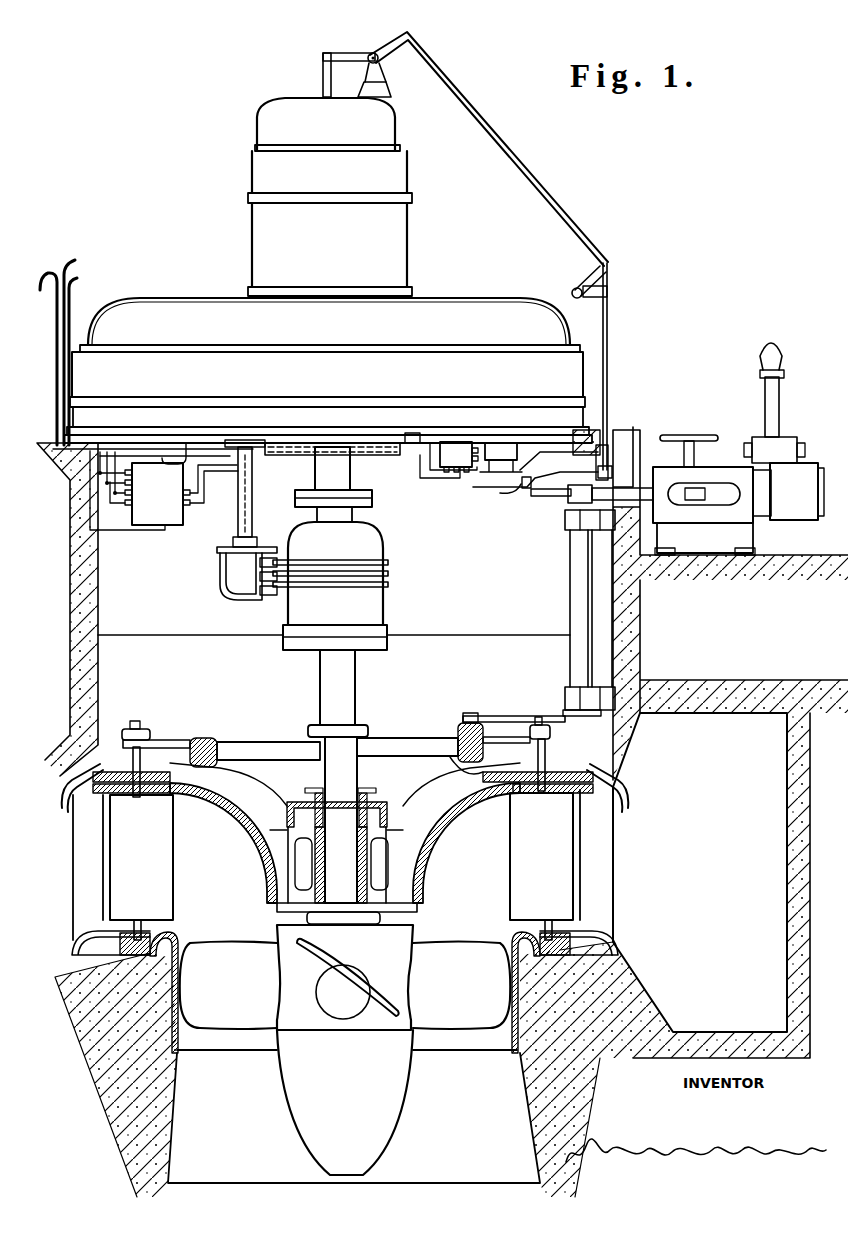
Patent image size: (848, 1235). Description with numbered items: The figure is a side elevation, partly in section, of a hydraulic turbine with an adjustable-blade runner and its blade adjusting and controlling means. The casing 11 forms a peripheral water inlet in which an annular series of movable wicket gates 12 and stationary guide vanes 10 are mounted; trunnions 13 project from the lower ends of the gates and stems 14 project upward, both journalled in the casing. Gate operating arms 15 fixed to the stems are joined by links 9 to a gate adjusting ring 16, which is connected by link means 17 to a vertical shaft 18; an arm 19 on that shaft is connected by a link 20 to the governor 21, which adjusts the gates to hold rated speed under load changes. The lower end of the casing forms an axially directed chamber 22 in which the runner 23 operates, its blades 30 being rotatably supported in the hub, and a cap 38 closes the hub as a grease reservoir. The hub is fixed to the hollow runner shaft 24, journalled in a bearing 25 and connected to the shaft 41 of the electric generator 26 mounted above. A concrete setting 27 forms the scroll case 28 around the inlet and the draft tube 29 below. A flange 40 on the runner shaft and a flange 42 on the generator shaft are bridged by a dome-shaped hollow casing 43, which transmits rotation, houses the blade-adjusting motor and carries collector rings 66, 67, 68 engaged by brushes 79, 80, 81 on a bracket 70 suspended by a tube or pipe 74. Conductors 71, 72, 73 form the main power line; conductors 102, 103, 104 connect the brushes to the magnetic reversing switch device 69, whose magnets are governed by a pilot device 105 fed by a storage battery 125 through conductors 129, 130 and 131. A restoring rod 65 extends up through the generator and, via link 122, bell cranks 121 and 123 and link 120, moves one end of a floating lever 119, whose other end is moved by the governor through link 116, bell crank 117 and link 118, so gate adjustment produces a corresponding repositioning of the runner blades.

The links 9 is at (195, 748).
The stationary guide vanes 10 is at (338, 865).
The casing 11 is at (88, 794).
The wicket gates 12 is at (341, 856).
The trunnions 13 is at (140, 930).
The stems 14 is at (137, 797).
The gate operating arms 15 is at (188, 738).
The gate adjusting ring 16 is at (450, 738).
The link means 17 is at (497, 716).
The shaft 18 is at (570, 594).
The arm 19 is at (570, 500).
The link 20 is at (610, 488).
The governor 21 is at (722, 468).
The axially directed chamber 22 is at (345, 857).
The runner 23 is at (345, 977).
The runner shaft 24 is at (338, 776).
The bearing 25 is at (324, 876).
The electric generator 26 is at (328, 370).
The concrete setting 27 is at (442, 812).
The scroll case 28 is at (700, 872).
The draft tube 29 is at (354, 1116).
The blades 30 is at (375, 1018).
The cap 38 is at (345, 1102).
The flange 40 is at (375, 648).
The generator shaft 41 is at (315, 474).
The flange 42 is at (372, 496).
The dome-shaped hollow casing 43 is at (335, 573).
The restoring rod 65 is at (323, 95).
The collector ring 66 is at (388, 562).
The collector ring 67 is at (388, 574).
The collector ring 68 is at (388, 585).
The magnetic reversing switch device 69 is at (140, 491).
The bracket 70 is at (232, 570).
The conductor 71 is at (141, 352).
The conductor 72 is at (63, 343).
The conductor 73 is at (149, 364).
The tube or pipe 74 is at (238, 524).
The brush 79 is at (278, 558).
The brush 80 is at (278, 574).
The brush 81 is at (278, 594).
The conductor 102 is at (186, 444).
The conductor 103 is at (216, 479).
The conductor 104 is at (216, 492).
The pilot device 105 is at (459, 457).
The link 116 is at (545, 497).
The bell crank 117 is at (524, 490).
The link 118 is at (500, 493).
The floating lever 119 is at (546, 476).
The link 120 is at (607, 372).
The bell crank 121 is at (578, 275).
The link 122 is at (322, 66).
The bell crank 123 is at (377, 43).
The storage battery 125 is at (500, 443).
The conductor 129 is at (404, 443).
The conductor 130 is at (418, 462).
The conductor 131 is at (414, 433).